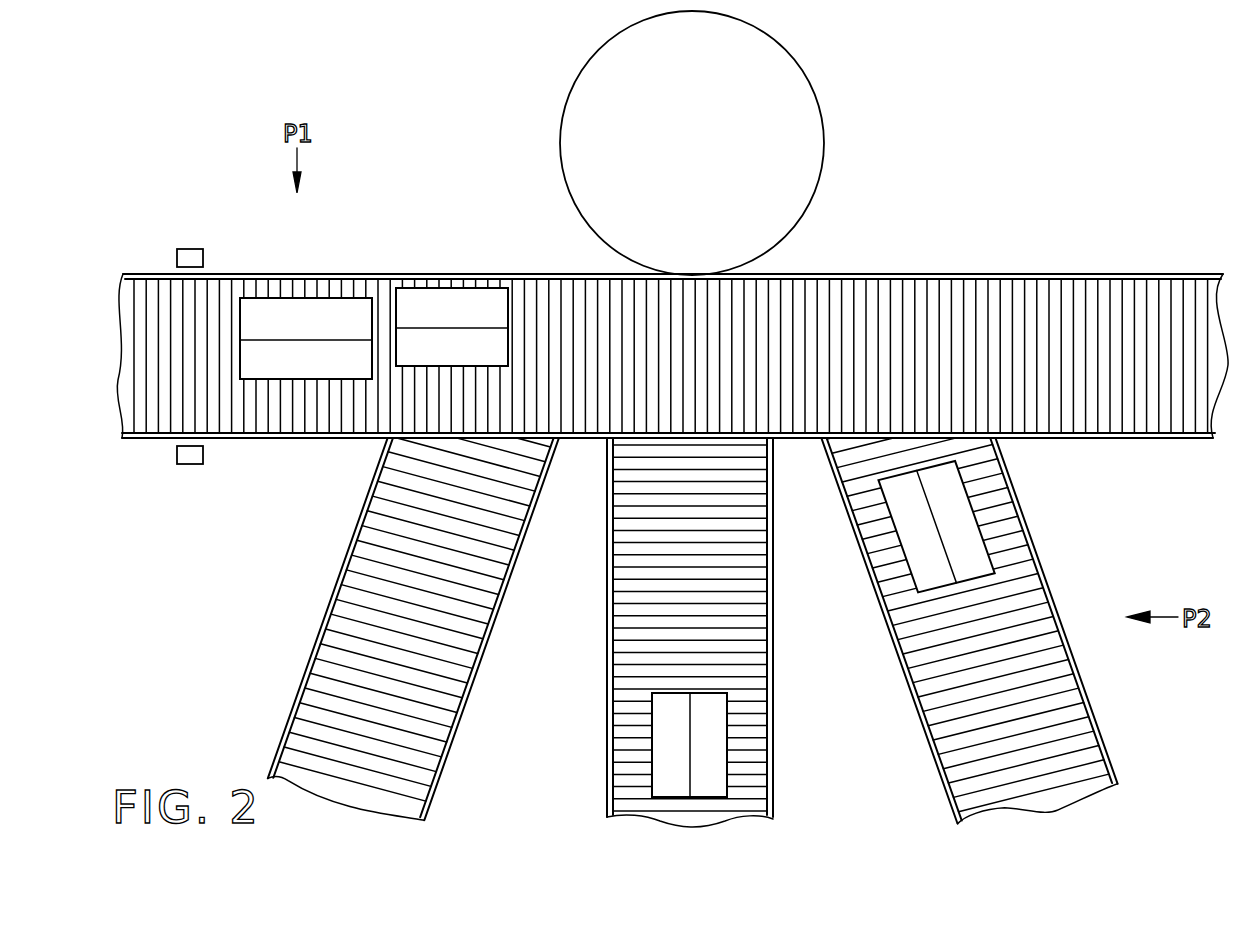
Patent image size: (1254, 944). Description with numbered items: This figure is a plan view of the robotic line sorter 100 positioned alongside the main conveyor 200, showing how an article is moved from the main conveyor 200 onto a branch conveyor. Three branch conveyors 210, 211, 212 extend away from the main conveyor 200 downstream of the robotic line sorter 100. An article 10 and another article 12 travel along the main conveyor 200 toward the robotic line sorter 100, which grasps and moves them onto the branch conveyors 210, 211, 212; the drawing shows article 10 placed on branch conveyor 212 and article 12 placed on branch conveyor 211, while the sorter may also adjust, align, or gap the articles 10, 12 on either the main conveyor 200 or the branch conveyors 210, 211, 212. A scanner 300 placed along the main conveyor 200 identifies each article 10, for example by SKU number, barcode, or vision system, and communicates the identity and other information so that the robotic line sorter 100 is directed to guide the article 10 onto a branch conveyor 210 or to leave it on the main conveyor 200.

The article 10 is at (320, 298).
The another article 12 is at (456, 288).
The robotic line sorter 100 is at (712, 157).
The main conveyor 200 is at (1048, 275).
The branch conveyor 210 is at (333, 592).
The branch conveyor 211 is at (773, 664).
The branch conveyor 212 is at (1057, 592).
The scanner 300 is at (203, 256).